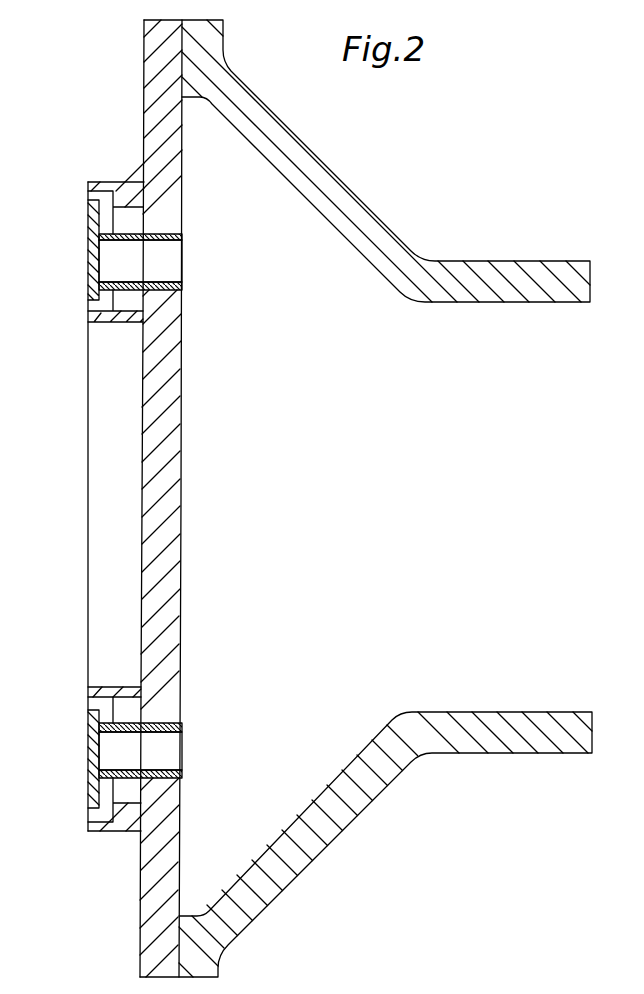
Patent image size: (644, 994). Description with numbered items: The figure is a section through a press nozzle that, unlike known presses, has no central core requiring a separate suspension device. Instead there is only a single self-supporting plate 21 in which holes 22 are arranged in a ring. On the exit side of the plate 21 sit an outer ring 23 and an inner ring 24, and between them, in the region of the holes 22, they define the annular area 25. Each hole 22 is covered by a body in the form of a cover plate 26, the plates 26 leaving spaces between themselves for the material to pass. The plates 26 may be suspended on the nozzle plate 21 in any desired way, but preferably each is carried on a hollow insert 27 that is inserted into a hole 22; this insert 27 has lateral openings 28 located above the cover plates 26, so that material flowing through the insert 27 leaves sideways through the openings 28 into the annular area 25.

The self-supporting plate 21 is at (175, 418).
The holes 22 is at (173, 268).
The outer ring 23 is at (120, 182).
The inner ring 24 is at (123, 320).
The annular area 25 is at (90, 216).
The plates 26 is at (88, 248).
The hollow insert 27 is at (155, 285).
The lateral openings 28 is at (88, 297).